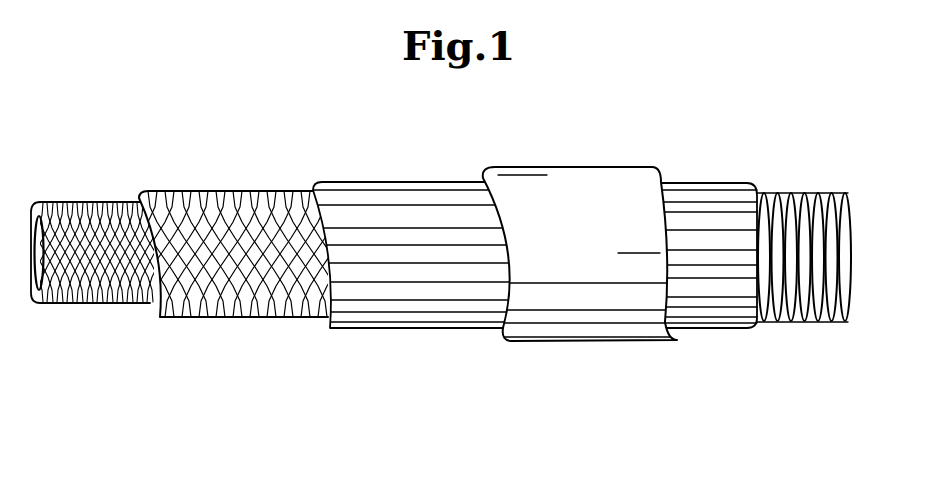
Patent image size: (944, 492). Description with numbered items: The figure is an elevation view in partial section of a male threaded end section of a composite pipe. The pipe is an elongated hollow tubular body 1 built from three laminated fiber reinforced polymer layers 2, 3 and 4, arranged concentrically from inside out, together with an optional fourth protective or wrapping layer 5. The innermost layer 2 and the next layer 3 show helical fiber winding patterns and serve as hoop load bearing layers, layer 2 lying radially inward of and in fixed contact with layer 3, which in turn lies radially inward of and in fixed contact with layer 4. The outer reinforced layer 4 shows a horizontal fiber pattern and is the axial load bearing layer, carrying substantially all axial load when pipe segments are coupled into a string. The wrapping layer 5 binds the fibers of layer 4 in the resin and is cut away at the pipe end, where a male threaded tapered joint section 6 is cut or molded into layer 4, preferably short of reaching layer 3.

The elongated hollow tubular body 1 is at (456, 318).
The innermost fiber reinforced polymer layer 2 is at (108, 306).
The hoop load bearing layer 3 is at (268, 317).
The axial load bearing layer 4 is at (433, 329).
The protective or wrapping layer 5 is at (581, 287).
The male threaded tapered joint section 6 is at (850, 236).